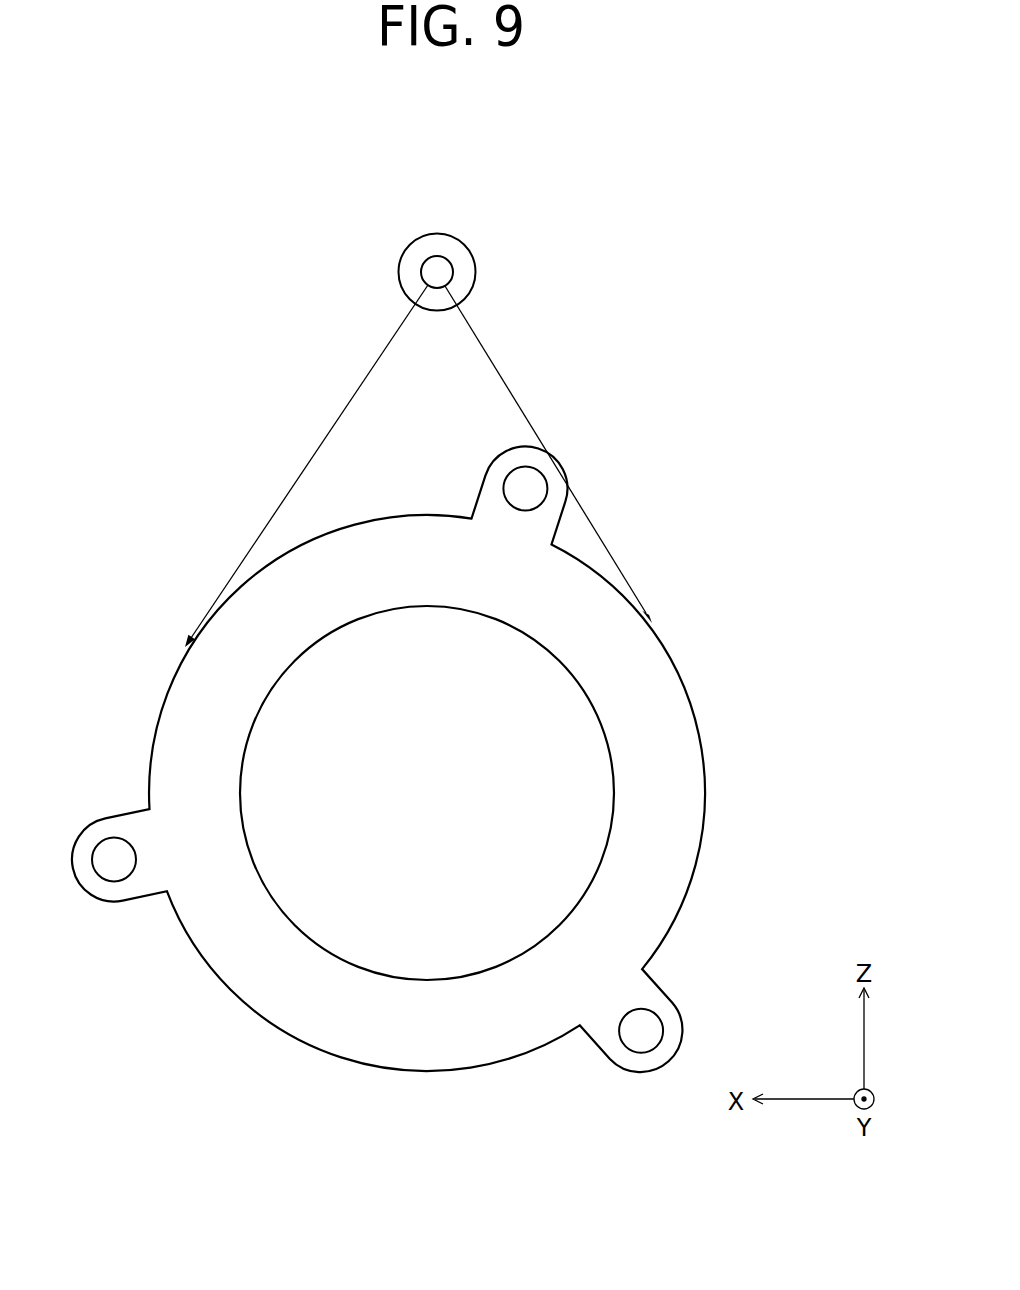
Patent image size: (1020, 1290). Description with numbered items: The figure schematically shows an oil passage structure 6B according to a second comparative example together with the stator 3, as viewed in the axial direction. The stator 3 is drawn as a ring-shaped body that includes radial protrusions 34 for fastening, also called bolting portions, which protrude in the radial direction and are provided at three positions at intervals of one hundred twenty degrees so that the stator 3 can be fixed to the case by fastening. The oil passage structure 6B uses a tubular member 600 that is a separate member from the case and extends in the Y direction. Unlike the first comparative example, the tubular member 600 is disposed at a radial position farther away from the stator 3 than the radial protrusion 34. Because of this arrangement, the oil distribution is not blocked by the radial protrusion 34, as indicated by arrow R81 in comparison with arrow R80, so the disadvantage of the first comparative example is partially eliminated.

The stator 3 is at (413, 814).
The radial protrusion for fastening 34 is at (493, 487).
The oil passage structure 6B is at (418, 379).
The tubular member 600 is at (413, 258).
The arrow R80 is at (333, 403).
The arrow R81 is at (528, 400).